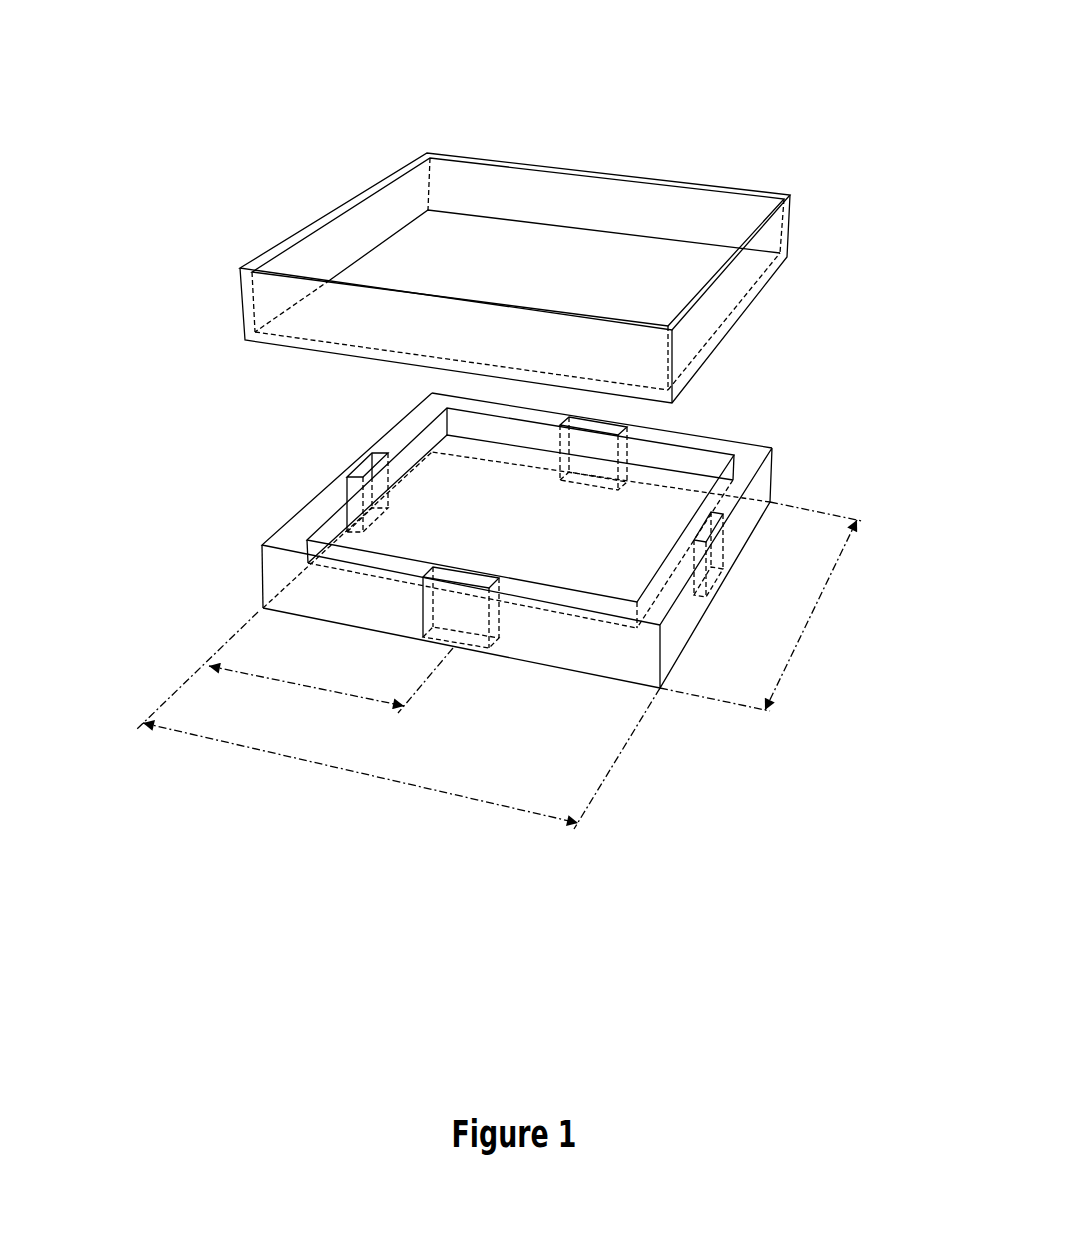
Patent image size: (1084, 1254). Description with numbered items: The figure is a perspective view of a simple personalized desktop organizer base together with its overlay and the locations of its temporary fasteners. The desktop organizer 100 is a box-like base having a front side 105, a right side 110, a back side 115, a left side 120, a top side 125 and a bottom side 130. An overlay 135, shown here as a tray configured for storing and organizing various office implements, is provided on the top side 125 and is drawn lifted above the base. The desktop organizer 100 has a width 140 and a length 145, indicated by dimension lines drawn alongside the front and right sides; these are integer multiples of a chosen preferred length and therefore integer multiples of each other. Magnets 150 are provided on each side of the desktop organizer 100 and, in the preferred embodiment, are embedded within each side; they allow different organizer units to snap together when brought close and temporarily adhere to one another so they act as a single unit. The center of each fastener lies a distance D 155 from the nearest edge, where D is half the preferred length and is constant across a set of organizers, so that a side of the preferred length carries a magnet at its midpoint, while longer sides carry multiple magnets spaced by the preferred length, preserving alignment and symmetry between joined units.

The desktop organizer 100 is at (208, 165).
The front side 105 is at (268, 560).
The right side 110 is at (755, 485).
The back side 115 is at (733, 430).
The left side 120 is at (303, 497).
The top side 125 is at (410, 425).
The bottom side 130 is at (682, 670).
The overlay 135 is at (737, 170).
The width 140 is at (340, 782).
The length 145 is at (813, 625).
The magnets 150 is at (683, 520).
The distance D 155 is at (296, 663).